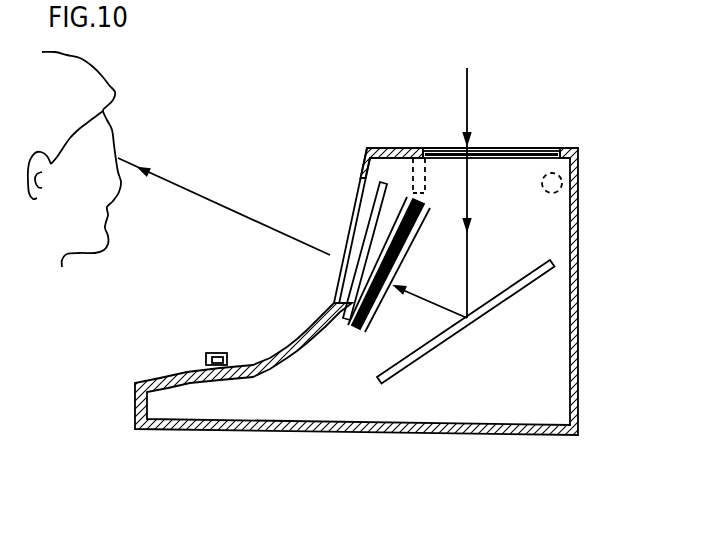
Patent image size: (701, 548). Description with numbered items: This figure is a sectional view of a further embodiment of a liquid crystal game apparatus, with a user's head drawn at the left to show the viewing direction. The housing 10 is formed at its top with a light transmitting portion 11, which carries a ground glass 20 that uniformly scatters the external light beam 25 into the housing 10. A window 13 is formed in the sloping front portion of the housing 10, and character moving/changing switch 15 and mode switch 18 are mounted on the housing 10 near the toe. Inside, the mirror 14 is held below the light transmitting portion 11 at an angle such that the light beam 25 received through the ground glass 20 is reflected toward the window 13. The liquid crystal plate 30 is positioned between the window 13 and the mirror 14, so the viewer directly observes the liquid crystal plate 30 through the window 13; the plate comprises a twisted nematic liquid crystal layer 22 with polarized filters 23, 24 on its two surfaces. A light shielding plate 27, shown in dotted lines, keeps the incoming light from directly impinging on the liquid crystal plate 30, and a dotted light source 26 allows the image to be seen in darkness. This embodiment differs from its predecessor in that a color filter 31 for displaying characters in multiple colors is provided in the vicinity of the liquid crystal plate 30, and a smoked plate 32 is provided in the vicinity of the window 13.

The housing 10 is at (574, 377).
The light transmitting portion 11 is at (505, 150).
The window 13 is at (350, 195).
The mirror 14 is at (538, 277).
The character moving/changing switch 15 is at (215, 353).
The mode switch 18 is at (227, 362).
The ground glass 20 is at (533, 150).
The liquid crystal layer 22 is at (333, 322).
The polarized filter 23 is at (358, 325).
The polarized filter 24 is at (345, 300).
The light beam 25 is at (469, 107).
The light source 26 is at (565, 195).
The light shielding plate 27 is at (417, 193).
The liquid crystal plate 30 is at (420, 203).
The color filter 31 is at (361, 328).
The smoked plate 32 is at (362, 178).